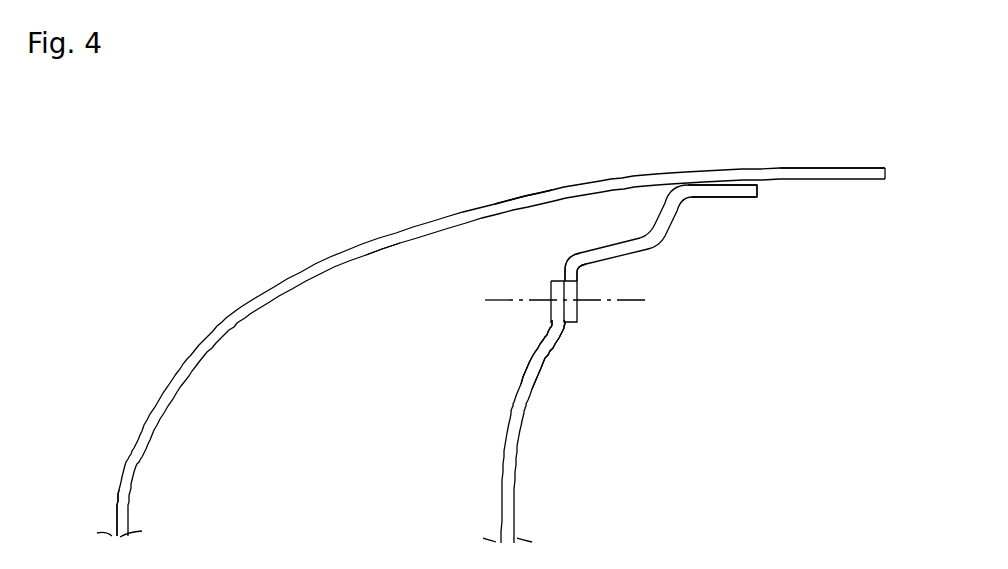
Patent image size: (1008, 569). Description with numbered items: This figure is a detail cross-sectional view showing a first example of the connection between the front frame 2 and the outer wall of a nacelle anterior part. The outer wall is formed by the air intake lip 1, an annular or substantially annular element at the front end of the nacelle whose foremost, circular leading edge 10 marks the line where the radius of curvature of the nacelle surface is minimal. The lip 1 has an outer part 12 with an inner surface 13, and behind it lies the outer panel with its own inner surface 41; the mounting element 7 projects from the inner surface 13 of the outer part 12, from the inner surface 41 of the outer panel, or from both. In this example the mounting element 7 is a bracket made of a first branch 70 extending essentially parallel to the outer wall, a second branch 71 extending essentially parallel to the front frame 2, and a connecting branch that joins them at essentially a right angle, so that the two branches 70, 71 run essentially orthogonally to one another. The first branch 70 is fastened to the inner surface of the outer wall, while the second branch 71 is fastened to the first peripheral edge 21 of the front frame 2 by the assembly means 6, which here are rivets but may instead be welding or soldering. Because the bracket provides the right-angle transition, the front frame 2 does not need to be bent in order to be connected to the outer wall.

The air intake lip 1 is at (186, 344).
The leading edge 10 is at (112, 515).
The outer part 12 is at (525, 195).
The inner surface 13 is at (381, 250).
The inner surface 41 is at (795, 183).
The front frame 2 is at (530, 460).
The first peripheral edge 21 is at (563, 335).
The assembly means 6 is at (578, 310).
The mounting element 7 is at (673, 228).
The first branch 70 is at (722, 185).
The second branch 71 is at (580, 287).